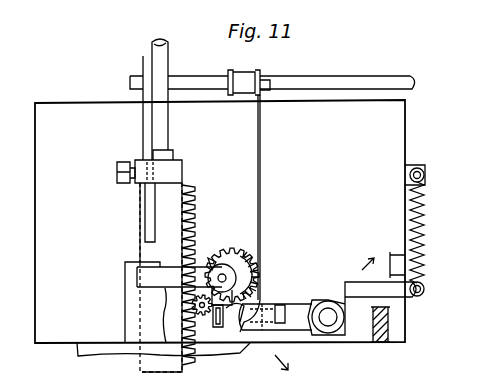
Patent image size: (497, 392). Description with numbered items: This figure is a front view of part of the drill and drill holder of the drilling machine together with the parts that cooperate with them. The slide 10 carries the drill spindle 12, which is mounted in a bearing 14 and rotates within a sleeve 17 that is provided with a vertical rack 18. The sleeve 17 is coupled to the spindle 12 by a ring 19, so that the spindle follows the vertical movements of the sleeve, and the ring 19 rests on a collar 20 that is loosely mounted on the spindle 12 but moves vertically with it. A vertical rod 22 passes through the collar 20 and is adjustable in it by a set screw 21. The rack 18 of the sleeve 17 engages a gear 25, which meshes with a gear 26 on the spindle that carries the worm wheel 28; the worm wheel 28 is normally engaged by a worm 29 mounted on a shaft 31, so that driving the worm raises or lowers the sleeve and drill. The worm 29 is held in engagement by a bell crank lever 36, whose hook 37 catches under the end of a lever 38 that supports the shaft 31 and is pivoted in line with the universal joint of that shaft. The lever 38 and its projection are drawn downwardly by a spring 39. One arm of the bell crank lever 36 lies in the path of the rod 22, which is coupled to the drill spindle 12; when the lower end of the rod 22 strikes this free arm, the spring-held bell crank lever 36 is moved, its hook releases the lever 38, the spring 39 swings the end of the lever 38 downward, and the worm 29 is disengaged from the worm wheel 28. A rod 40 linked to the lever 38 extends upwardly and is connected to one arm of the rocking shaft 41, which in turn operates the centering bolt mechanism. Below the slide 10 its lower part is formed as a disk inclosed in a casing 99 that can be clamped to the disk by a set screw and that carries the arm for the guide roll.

The slide 10 is at (220, 235).
The drill spindle 12 is at (168, 62).
The bearing 14 is at (126, 317).
The sleeve 17 is at (163, 212).
The vertical rack 18 is at (195, 211).
The ring 19 is at (175, 158).
The collar 20 is at (183, 172).
The set screw 21 is at (120, 178).
The vertical rod 22 is at (147, 123).
The gear 25 is at (203, 318).
The gear 26 is at (212, 259).
The worm wheel 28 is at (228, 252).
The worm 29 is at (219, 328).
The shaft 31 is at (283, 310).
The bell crank lever 36 is at (137, 277).
The hook 37 is at (242, 340).
The lever 38 is at (345, 290).
The spring 39 is at (425, 228).
The rod 40 is at (261, 187).
The rocking shaft 41 is at (362, 82).
The casing 99 is at (115, 352).